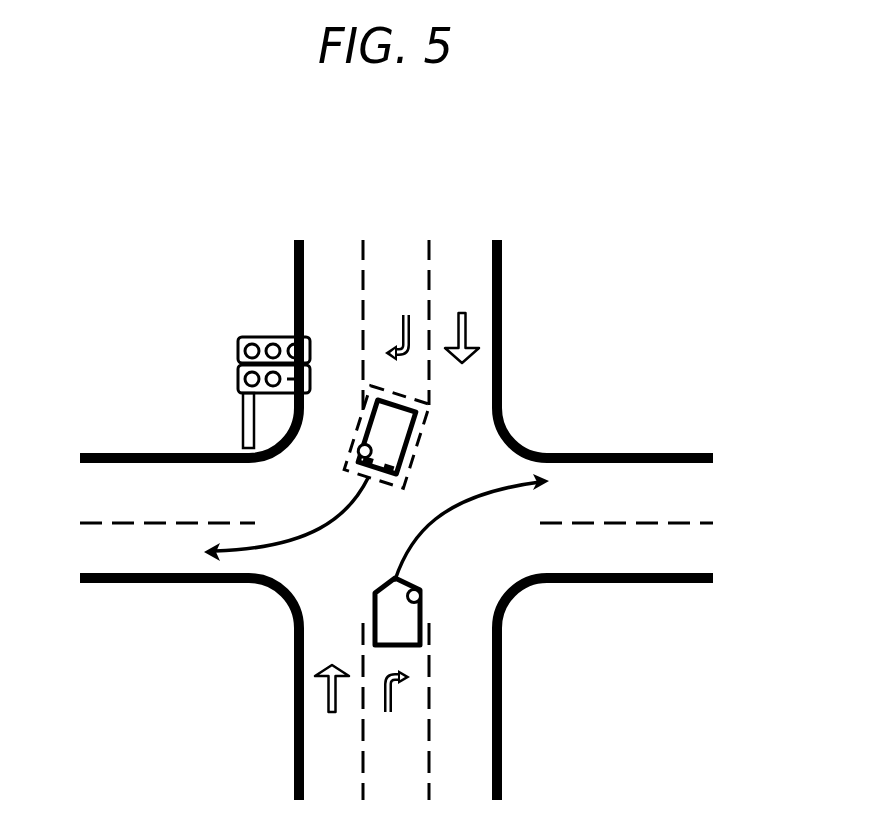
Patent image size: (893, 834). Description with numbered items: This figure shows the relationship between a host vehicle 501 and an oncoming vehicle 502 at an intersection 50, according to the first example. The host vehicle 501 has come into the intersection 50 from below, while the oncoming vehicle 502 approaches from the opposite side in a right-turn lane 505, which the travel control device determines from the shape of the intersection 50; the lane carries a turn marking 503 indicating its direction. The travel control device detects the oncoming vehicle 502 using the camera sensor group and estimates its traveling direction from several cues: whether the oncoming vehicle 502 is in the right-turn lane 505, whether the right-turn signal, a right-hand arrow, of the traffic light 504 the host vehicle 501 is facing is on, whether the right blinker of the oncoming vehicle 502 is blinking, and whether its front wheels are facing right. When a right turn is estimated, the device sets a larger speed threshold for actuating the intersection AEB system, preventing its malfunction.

The intersection 50 is at (605, 238).
The host vehicle 501 is at (422, 598).
The oncoming vehicle 502 is at (417, 437).
The left-turn lane marking 503 is at (403, 315).
The traffic light 504 is at (242, 338).
The right-turn lane 505 is at (395, 250).